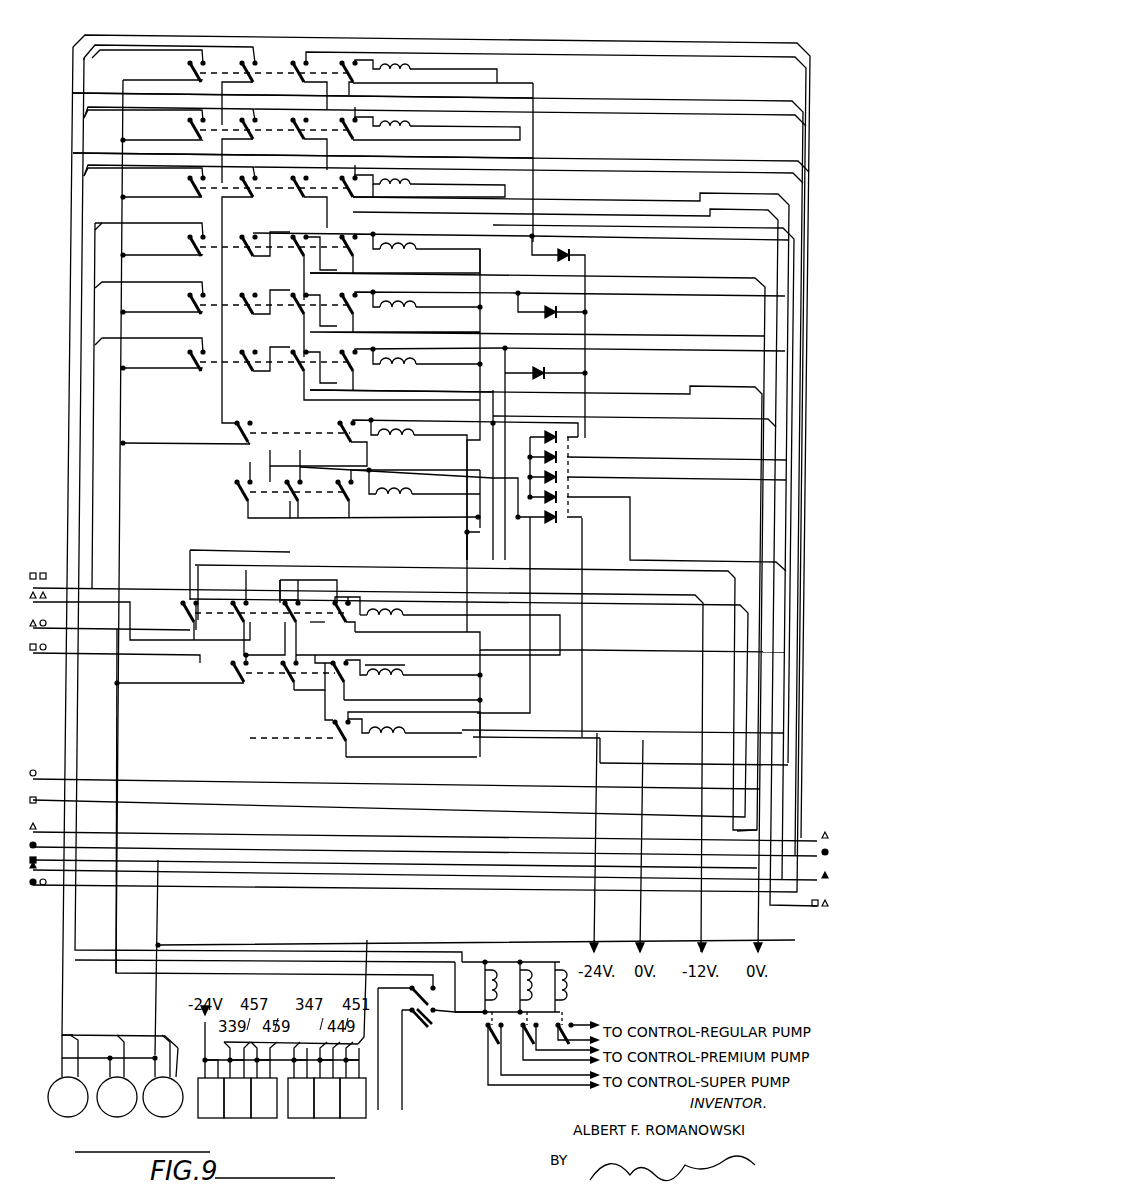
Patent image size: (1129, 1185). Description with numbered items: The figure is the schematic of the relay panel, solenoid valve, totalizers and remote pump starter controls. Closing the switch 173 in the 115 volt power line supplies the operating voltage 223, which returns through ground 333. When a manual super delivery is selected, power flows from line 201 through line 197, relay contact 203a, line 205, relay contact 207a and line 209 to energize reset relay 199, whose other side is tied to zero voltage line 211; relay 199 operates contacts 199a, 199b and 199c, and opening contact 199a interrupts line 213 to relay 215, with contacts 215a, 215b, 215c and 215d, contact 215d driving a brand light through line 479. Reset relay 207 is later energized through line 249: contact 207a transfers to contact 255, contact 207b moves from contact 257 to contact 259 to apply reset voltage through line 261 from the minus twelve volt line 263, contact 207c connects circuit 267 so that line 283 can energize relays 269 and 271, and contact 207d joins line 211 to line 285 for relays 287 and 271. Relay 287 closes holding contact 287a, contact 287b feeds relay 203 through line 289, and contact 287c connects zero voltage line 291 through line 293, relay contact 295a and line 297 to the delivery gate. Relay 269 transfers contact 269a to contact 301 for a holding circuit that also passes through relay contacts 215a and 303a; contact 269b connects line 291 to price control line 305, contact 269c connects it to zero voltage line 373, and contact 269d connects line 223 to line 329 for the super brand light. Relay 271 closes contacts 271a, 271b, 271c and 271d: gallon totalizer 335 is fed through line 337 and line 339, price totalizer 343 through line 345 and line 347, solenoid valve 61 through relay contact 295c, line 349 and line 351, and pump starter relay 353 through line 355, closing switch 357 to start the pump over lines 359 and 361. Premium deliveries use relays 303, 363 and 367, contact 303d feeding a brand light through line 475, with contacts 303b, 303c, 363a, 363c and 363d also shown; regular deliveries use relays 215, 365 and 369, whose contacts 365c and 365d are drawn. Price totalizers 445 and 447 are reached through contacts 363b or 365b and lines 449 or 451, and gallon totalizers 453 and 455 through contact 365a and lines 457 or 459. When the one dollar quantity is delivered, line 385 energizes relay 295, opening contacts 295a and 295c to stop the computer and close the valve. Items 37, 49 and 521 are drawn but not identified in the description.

The regular lamp 37 is at (68, 1089).
The premium lamp 49 is at (117, 1089).
The solenoid valve 61 is at (163, 1089).
The 115 volt power line 115 is at (415, 1065).
The switch 173 is at (426, 1028).
The line 197 is at (570, 760).
The reset relay 199 is at (400, 678).
The relay contact 199a is at (330, 685).
The relay contact 199b is at (292, 686).
The relay contact 199c is at (232, 668).
The power line 201 is at (651, 728).
The relay 203 is at (404, 727).
The relay contact 203a is at (345, 745).
The line 205 is at (315, 722).
The reset relay 207 is at (439, 607).
The relay contact 207a is at (352, 628).
The relay contact 207b is at (292, 618).
The relay contact 207c is at (232, 606).
The relay contact 207d is at (181, 616).
The line 209 is at (403, 665).
The zero voltage line 211 is at (522, 740).
The line 213 is at (520, 630).
The relay 215 is at (412, 368).
The relay contact 215a is at (350, 370).
The relay contact 215b is at (298, 368).
The relay contact 215c is at (240, 365).
The relay contact 215d is at (188, 355).
The 115 volt power supply 223 is at (118, 512).
The line 249 is at (692, 606).
The contact 255 is at (362, 605).
The contact 257 is at (272, 606).
The contact 259 is at (310, 622).
The line 261 is at (645, 644).
The line 263 is at (702, 666).
The circuit 267 is at (746, 558).
The relay 269 is at (421, 252).
The relay contact 269a is at (357, 255).
The relay contact 269b is at (298, 252).
The relay contact 269c is at (240, 250).
The relay contact 269d is at (188, 240).
The relay 271 is at (410, 72).
The relay contact 271a is at (350, 62).
The relay contact 271b is at (297, 66).
The relay contact 271c is at (240, 65).
The relay contact 271d is at (188, 66).
The line 283 is at (533, 202).
The line 285 is at (510, 80).
The relay 287 is at (412, 497).
The relay contact 287a is at (345, 500).
The relay contact 287b is at (292, 505).
The relay contact 287c is at (238, 497).
The line 289 is at (533, 549).
The zero voltage line 291 is at (250, 560).
The line 293 is at (250, 472).
The relay 295 is at (414, 432).
The relay contact 295a is at (343, 440).
The relay contact 295c is at (243, 414).
The line 297 is at (748, 428).
The contact 301 is at (398, 190).
The relay 303 is at (547, 404).
The relay contact 303a is at (357, 312).
The relay contact 303b is at (298, 310).
The relay contact 303c is at (240, 308).
The relay contact 303d is at (188, 298).
The line 305 is at (708, 278).
The line 329 is at (125, 228).
The ground 333 is at (155, 988).
The super gallon totalizer 335 is at (203, 1075).
The line 337 is at (700, 193).
The line 339 is at (724, 58).
The price totalizer 343 is at (302, 1112).
The line 345 is at (700, 214).
The line 347 is at (762, 48).
The line 349 is at (222, 420).
The line 351 is at (82, 46).
The submerged pump motor starter control relay 353 is at (476, 986).
The line 355 is at (96, 58).
The switch 357 is at (500, 1030).
The line 359 is at (575, 1078).
The line 361 is at (525, 1085).
The relay 363 is at (412, 130).
The relay contact 363a is at (360, 140).
The relay contact 363b is at (304, 140).
The relay contact 363c is at (248, 122).
The relay contact 363d is at (188, 123).
The relay 365 is at (412, 188).
The relay contact 365a is at (355, 197).
The relay contact 365b is at (304, 198).
The relay contact 365c is at (248, 180).
The relay contact 365d is at (188, 181).
The relay 367 is at (495, 960).
The relay 369 is at (568, 992).
The zero voltage line 373 is at (758, 232).
The line 385 is at (690, 404).
The price totalizer 445 is at (329, 1093).
The price totalizer 447 is at (358, 1112).
The line 449 is at (753, 101).
The line 451 is at (762, 160).
The gallon totalizer 453 is at (238, 1112).
The gallon totalizer 455 is at (266, 1093).
The line 457 is at (722, 118).
The line 459 is at (726, 188).
The line 475 is at (102, 282).
The line 479 is at (102, 338).
The conductor 521 is at (90, 184).